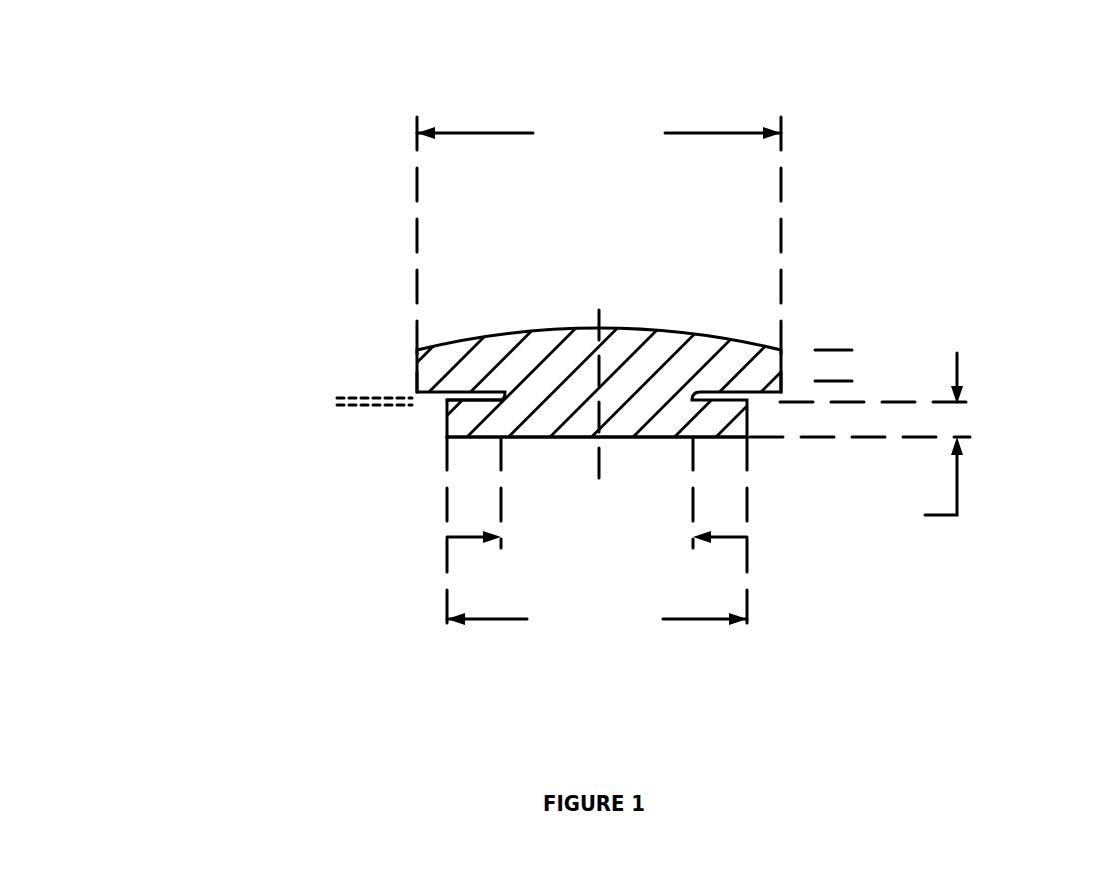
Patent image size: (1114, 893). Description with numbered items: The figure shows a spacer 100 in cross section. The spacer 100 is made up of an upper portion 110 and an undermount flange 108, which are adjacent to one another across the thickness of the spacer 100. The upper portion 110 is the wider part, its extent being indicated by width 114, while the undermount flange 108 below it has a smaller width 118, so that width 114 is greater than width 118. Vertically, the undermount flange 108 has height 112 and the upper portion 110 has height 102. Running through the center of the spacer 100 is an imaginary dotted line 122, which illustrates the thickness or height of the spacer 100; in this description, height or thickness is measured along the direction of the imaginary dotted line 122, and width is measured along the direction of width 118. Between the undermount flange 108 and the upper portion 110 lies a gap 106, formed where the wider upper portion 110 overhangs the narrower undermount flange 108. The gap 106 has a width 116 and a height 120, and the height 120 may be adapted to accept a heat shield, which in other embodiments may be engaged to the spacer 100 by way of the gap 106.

The spacer 100 is at (488, 236).
The height 102 is at (866, 376).
The gap 106 is at (462, 409).
The undermount flange 108 is at (660, 447).
The upper portion 110 is at (630, 335).
The height 112 is at (975, 424).
The width 114 is at (599, 254).
The width 116 is at (455, 580).
The width 118 is at (597, 533).
The height 120 is at (318, 405).
The imaginary dotted line 122 is at (582, 355).